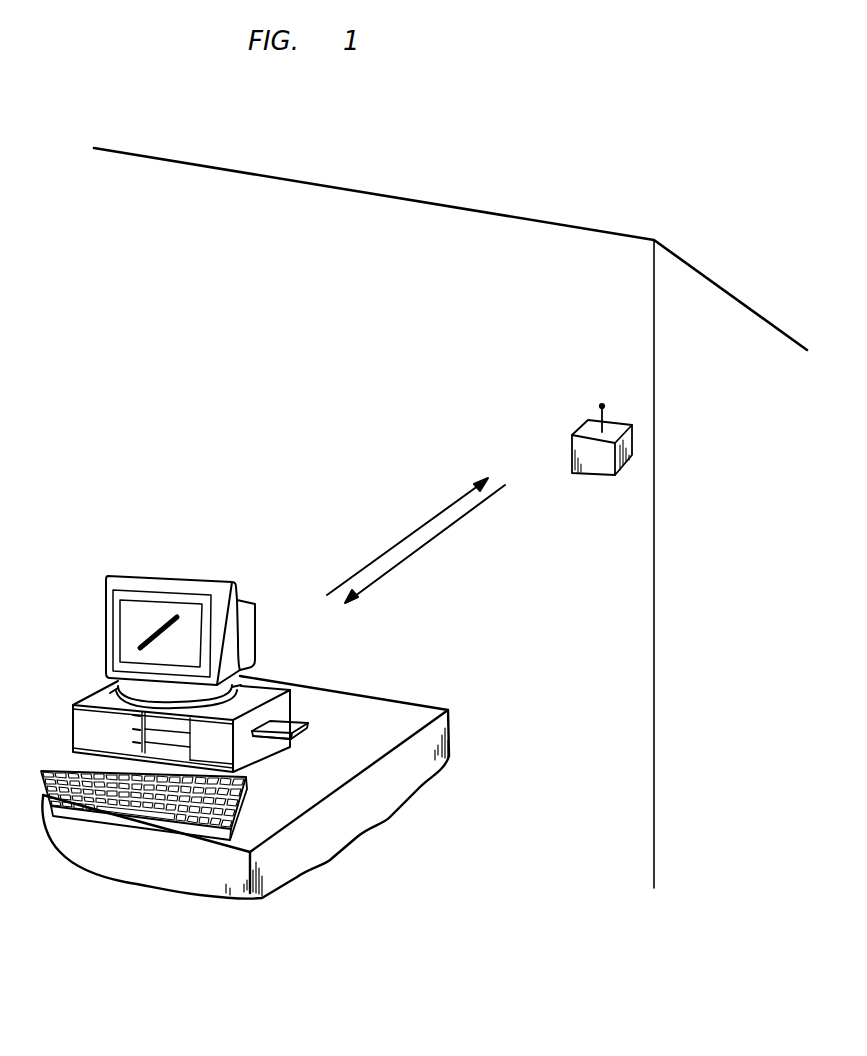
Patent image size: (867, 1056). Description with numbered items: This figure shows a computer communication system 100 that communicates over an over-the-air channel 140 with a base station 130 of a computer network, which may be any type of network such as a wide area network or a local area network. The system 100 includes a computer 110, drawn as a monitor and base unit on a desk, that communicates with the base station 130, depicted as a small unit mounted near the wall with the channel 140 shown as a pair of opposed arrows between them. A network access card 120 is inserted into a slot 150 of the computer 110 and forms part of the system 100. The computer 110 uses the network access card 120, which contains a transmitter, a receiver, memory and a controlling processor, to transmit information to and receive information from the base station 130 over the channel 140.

The system 100 is at (80, 530).
The computer 110 is at (76, 704).
The network access card 120 is at (289, 741).
The base station 130 is at (598, 477).
The over-the-air channel 140 is at (399, 557).
The slot 150 is at (270, 721).